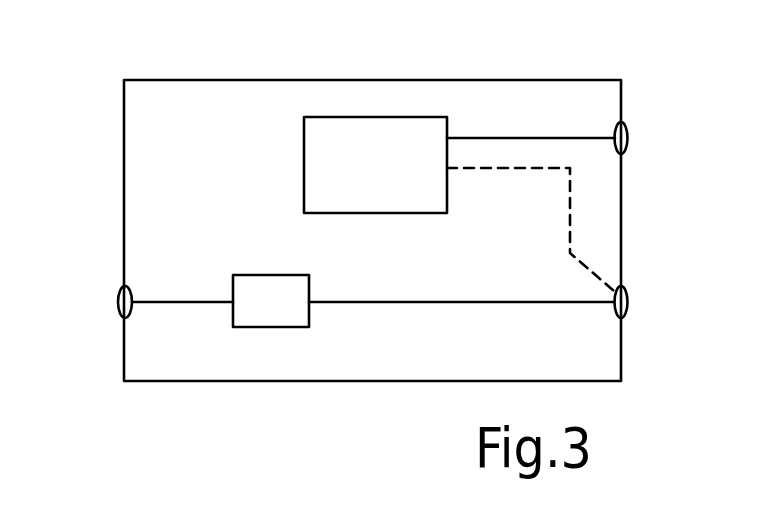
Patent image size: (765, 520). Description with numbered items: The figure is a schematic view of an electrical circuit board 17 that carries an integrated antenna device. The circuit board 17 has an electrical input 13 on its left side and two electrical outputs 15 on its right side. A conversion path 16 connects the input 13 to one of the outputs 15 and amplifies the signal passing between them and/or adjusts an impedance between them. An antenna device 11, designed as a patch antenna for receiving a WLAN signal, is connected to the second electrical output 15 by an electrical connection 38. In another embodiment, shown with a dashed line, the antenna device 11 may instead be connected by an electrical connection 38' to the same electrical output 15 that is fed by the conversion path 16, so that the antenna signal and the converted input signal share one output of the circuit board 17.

The electrical circuit board 17 is at (235, 102).
The antenna device 11 is at (387, 128).
The electrical connection 38 is at (531, 81).
The electrical connection 38' is at (535, 161).
The electrical input 13 is at (117, 302).
The conversion path 16 is at (273, 311).
The electrical output 15 is at (628, 138).